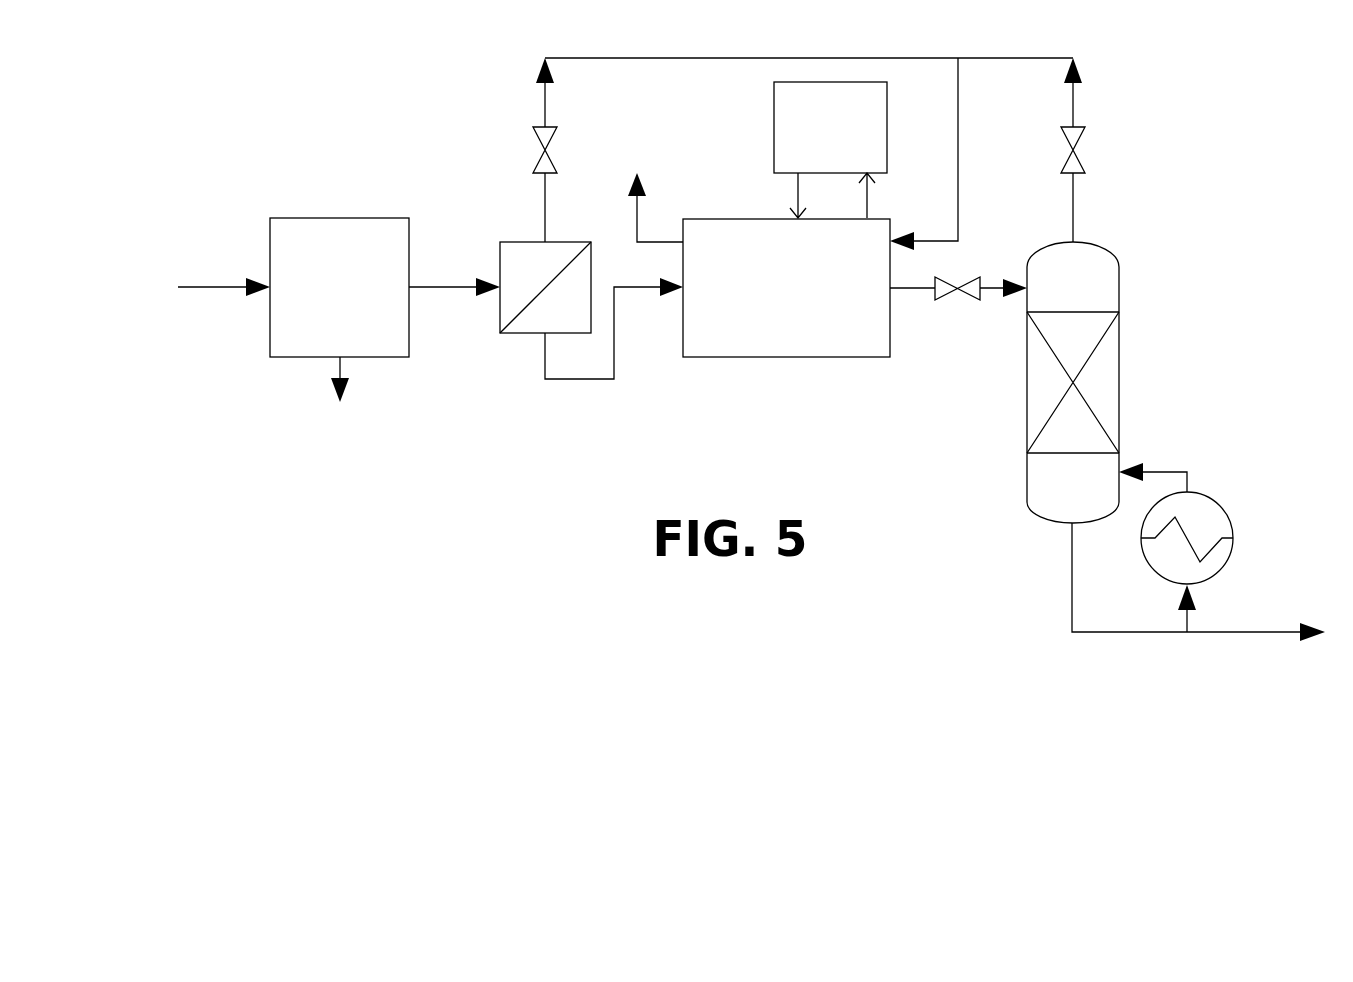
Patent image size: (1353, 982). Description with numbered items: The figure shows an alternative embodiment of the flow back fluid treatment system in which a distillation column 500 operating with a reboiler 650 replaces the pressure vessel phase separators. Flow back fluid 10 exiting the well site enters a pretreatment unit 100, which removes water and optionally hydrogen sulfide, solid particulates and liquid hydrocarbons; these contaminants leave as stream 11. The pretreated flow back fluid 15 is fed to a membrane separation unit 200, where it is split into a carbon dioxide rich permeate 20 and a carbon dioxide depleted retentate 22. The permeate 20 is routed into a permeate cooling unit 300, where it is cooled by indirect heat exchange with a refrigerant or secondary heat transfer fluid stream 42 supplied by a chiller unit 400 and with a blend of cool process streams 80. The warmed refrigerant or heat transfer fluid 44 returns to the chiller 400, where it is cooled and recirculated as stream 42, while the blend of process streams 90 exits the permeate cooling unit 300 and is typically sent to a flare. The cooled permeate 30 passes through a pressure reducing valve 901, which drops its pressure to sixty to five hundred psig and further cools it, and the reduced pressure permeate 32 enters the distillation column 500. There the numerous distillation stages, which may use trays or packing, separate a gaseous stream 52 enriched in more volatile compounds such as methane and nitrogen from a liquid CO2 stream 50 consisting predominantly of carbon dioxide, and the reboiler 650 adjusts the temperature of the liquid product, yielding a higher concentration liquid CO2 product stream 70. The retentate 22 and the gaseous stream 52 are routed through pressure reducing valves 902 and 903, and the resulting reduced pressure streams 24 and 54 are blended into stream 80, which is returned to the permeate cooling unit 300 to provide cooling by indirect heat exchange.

The flow back fluid 10 is at (224, 271).
The pretreatment unit 100 is at (339, 287).
The stream of removed contaminants 11 is at (323, 379).
The pretreated flow back fluid 15 is at (454, 274).
The membrane separation unit 200 is at (553, 341).
The retentate 22 is at (522, 207).
The pressure reducing valve 902 is at (521, 150).
The reduced pressure retentate stream 24 is at (804, 73).
The permeate 20 is at (614, 328).
The blend of process streams 90 is at (655, 207).
The refrigerant or secondary heat transfer fluid stream 42 is at (782, 195).
The chiller unit 400 is at (830, 127).
The returned refrigerant or secondary heat transfer fluid 44 is at (896, 187).
The permeate cooling unit 300 is at (786, 288).
The blend of cool process streams 80 is at (940, 154).
The cooled permeate 30 is at (958, 315).
The pressure reducing valve 901 is at (957, 274).
The reduced pressure permeate 32 is at (1054, 382).
The distillation column 500 is at (1138, 382).
The gaseous stream 52 is at (1098, 207).
The pressure reducing valve 903 is at (1051, 150).
The reduced pressure gaseous stream 54 is at (1093, 92).
The reboiler 650 is at (1210, 523).
The liquid CO2 stream 50 is at (1134, 578).
The liquid CO2 product stream 70 is at (1256, 618).